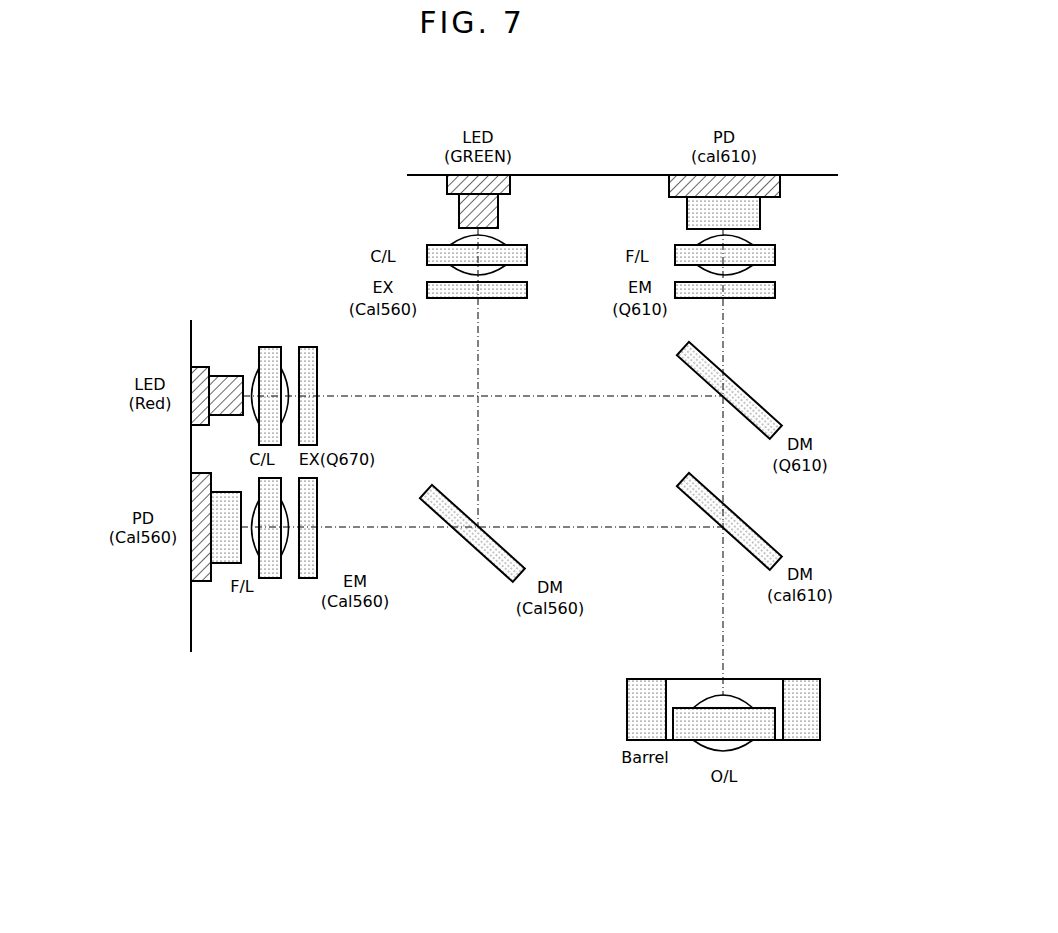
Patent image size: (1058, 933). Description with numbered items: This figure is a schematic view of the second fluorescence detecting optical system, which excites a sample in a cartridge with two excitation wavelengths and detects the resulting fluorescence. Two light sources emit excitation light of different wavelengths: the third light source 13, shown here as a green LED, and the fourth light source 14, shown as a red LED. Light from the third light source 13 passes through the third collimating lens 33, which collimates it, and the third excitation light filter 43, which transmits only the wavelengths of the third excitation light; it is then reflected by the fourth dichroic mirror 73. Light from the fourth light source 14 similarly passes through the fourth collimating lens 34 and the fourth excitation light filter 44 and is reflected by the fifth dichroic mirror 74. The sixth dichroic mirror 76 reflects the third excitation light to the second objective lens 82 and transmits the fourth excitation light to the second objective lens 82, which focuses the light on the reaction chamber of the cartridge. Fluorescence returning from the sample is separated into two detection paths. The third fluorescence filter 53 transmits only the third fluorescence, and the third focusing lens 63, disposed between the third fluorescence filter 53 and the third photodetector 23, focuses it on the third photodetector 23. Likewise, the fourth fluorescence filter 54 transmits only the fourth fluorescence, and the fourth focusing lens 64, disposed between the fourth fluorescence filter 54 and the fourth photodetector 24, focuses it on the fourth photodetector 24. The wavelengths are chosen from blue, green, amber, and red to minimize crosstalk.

The third light source 13 is at (510, 186).
The fourth photodetector 24 is at (780, 190).
The third collimating lens 33 is at (527, 255).
The third excitation light filter 43 is at (527, 291).
The fourth focusing lens 64 is at (775, 255).
The fourth fluorescence filter 54 is at (775, 291).
The fourth light source 14 is at (200, 365).
The fourth collimating lens 34 is at (270, 345).
The fourth excitation light filter 44 is at (308, 345).
The third photodetector 23 is at (205, 583).
The third focusing lens 63 is at (270, 580).
The third fluorescence filter 53 is at (308, 580).
The fourth dichroic mirror 73 is at (485, 562).
The fifth dichroic mirror 74 is at (760, 400).
The sixth dichroic mirror 76 is at (760, 532).
The second objective lens 82 is at (627, 711).